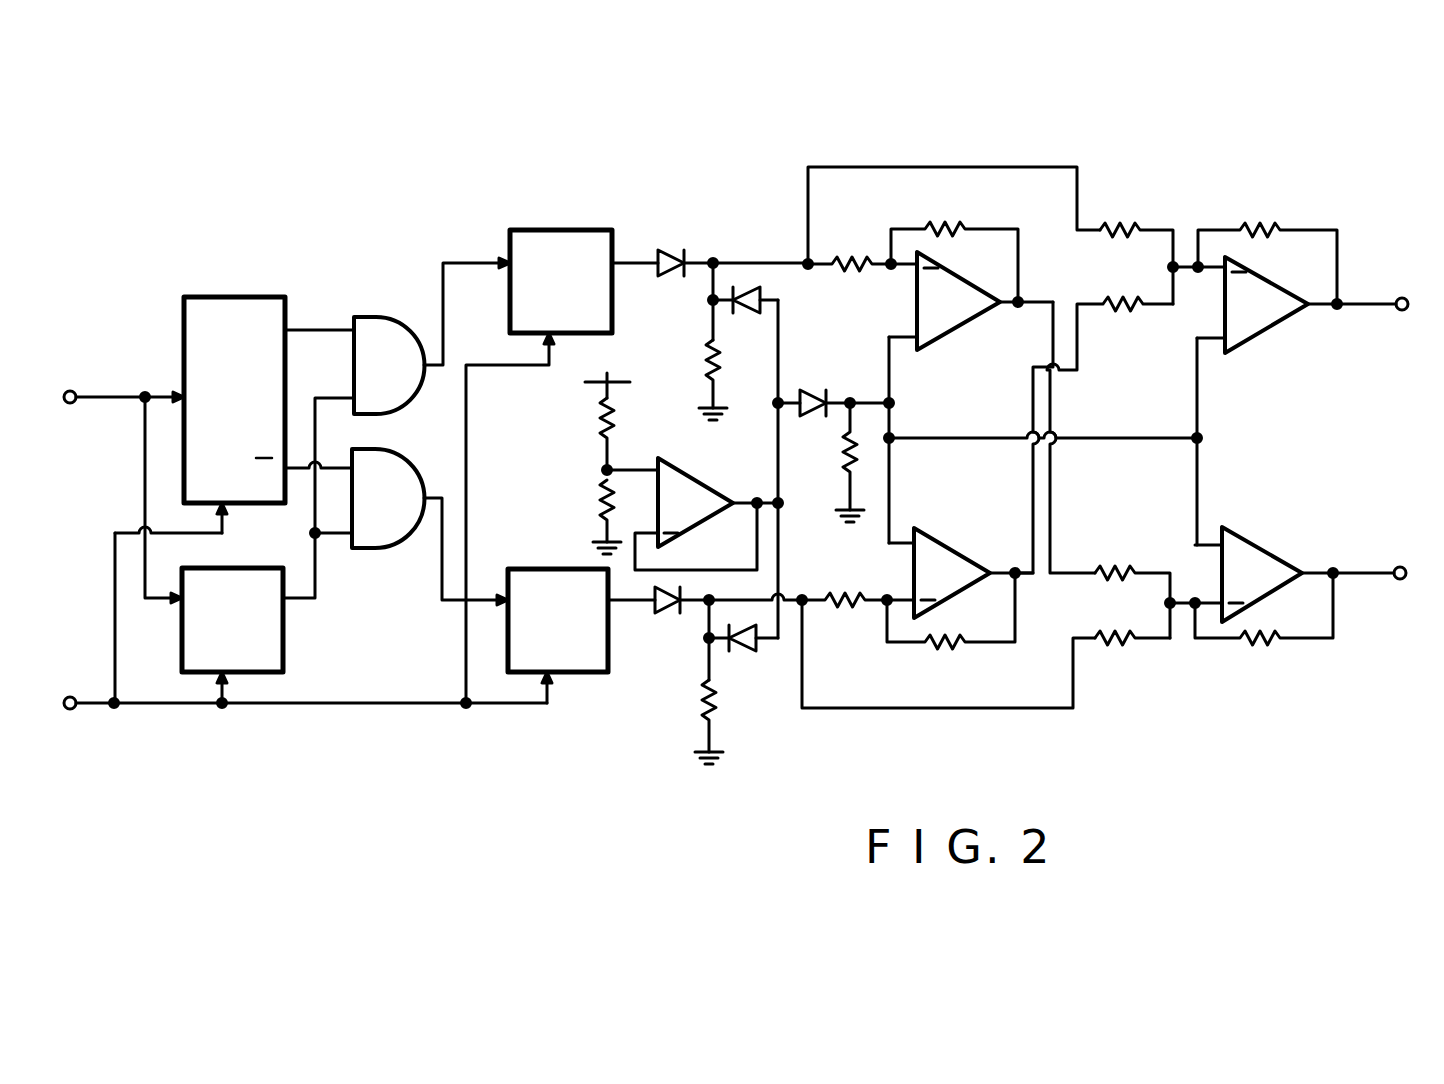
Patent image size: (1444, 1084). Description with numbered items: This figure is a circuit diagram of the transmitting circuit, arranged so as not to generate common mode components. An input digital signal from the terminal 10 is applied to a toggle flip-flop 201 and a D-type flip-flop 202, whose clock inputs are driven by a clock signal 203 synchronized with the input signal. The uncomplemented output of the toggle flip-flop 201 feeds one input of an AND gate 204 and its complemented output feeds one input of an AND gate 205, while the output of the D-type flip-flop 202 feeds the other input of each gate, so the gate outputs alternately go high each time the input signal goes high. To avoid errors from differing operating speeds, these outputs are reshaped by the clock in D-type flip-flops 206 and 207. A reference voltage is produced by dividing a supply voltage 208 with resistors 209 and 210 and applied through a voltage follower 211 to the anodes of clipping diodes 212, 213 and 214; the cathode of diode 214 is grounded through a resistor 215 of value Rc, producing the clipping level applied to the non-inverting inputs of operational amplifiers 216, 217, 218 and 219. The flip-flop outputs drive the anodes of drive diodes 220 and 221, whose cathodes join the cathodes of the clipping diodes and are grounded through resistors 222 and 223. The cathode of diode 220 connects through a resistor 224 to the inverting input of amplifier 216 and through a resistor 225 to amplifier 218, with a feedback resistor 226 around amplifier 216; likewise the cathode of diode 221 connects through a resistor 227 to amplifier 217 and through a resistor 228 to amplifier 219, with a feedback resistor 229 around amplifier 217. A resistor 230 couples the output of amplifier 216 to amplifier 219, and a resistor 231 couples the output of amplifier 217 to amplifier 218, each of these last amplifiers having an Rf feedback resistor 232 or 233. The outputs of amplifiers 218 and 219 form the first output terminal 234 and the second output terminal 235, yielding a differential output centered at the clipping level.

The terminal 10 is at (70, 391).
The toggle flip-flop 201 is at (239, 297).
The D-type flip-flop 202 is at (245, 569).
The clock signal 203 is at (68, 709).
The AND gate 204 is at (382, 316).
The AND gate 205 is at (378, 548).
The D-type flip-flop 206 is at (561, 230).
The D-type flip-flop 207 is at (541, 568).
The supply voltage 208 is at (607, 376).
The resistor 209 is at (598, 421).
The resistor 210 is at (598, 496).
The voltage follower 211 is at (707, 481).
The clipping diode 212 is at (752, 294).
The clipping diode 213 is at (742, 654).
The clipping diode 214 is at (817, 387).
The resistor 215 is at (827, 462).
The operational amplifier 216 is at (950, 344).
The operational amplifier 217 is at (961, 560).
The operational amplifier 218 is at (1272, 342).
The operational amplifier 219 is at (1260, 545).
The drive diode 220 is at (673, 251).
The drive diode 221 is at (667, 615).
The resistor 222 is at (704, 355).
The resistor 223 is at (702, 699).
The resistor 224 is at (860, 264).
The resistor 225 is at (1124, 230).
The resistor 226 is at (954, 228).
The resistor 227 is at (840, 613).
The resistor 228 is at (1098, 636).
The resistor 229 is at (945, 655).
The resistor 230 is at (1116, 573).
The resistor 231 is at (1110, 308).
The resistor 232 is at (1266, 230).
The resistor 233 is at (1262, 655).
The first output terminal 234 is at (1405, 299).
The second output terminal 235 is at (1403, 570).